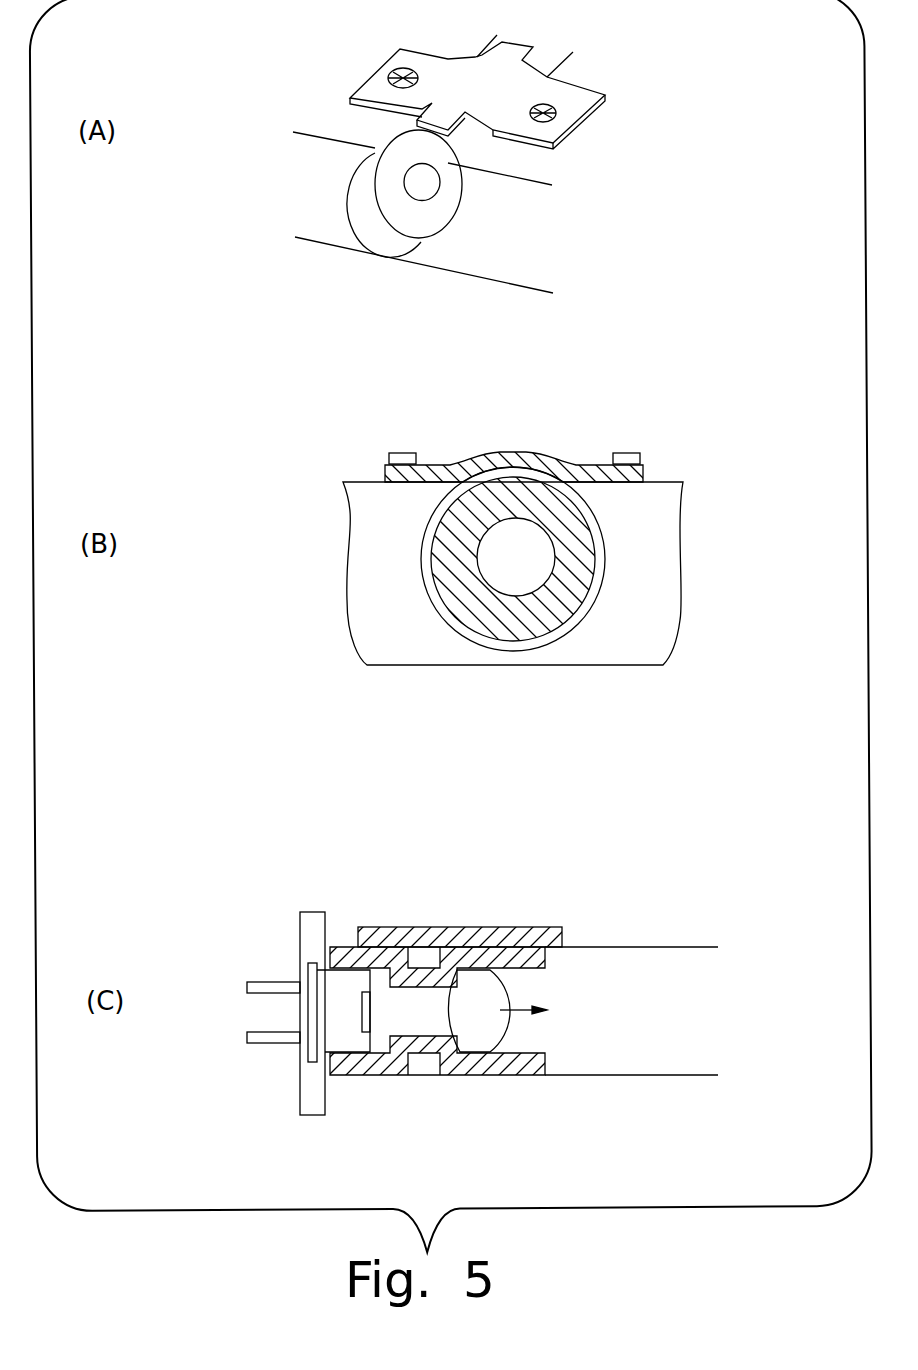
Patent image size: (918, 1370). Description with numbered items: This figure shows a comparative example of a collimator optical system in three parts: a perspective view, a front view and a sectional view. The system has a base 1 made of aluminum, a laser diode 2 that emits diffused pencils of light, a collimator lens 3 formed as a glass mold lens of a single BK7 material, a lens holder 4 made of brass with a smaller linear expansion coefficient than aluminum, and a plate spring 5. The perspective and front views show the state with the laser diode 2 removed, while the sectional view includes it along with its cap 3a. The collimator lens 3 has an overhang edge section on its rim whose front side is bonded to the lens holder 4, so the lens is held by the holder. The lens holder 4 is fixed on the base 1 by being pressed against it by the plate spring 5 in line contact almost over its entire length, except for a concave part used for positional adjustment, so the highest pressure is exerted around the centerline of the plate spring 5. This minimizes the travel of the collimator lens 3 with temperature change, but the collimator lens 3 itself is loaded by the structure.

The base 1 is at (328, 223).
The laser diode 2 is at (315, 1107).
The collimator lens 3 is at (508, 1027).
The laser diode cap 3a is at (468, 1043).
The lens holder 4 is at (422, 217).
The plate spring 5 is at (587, 98).